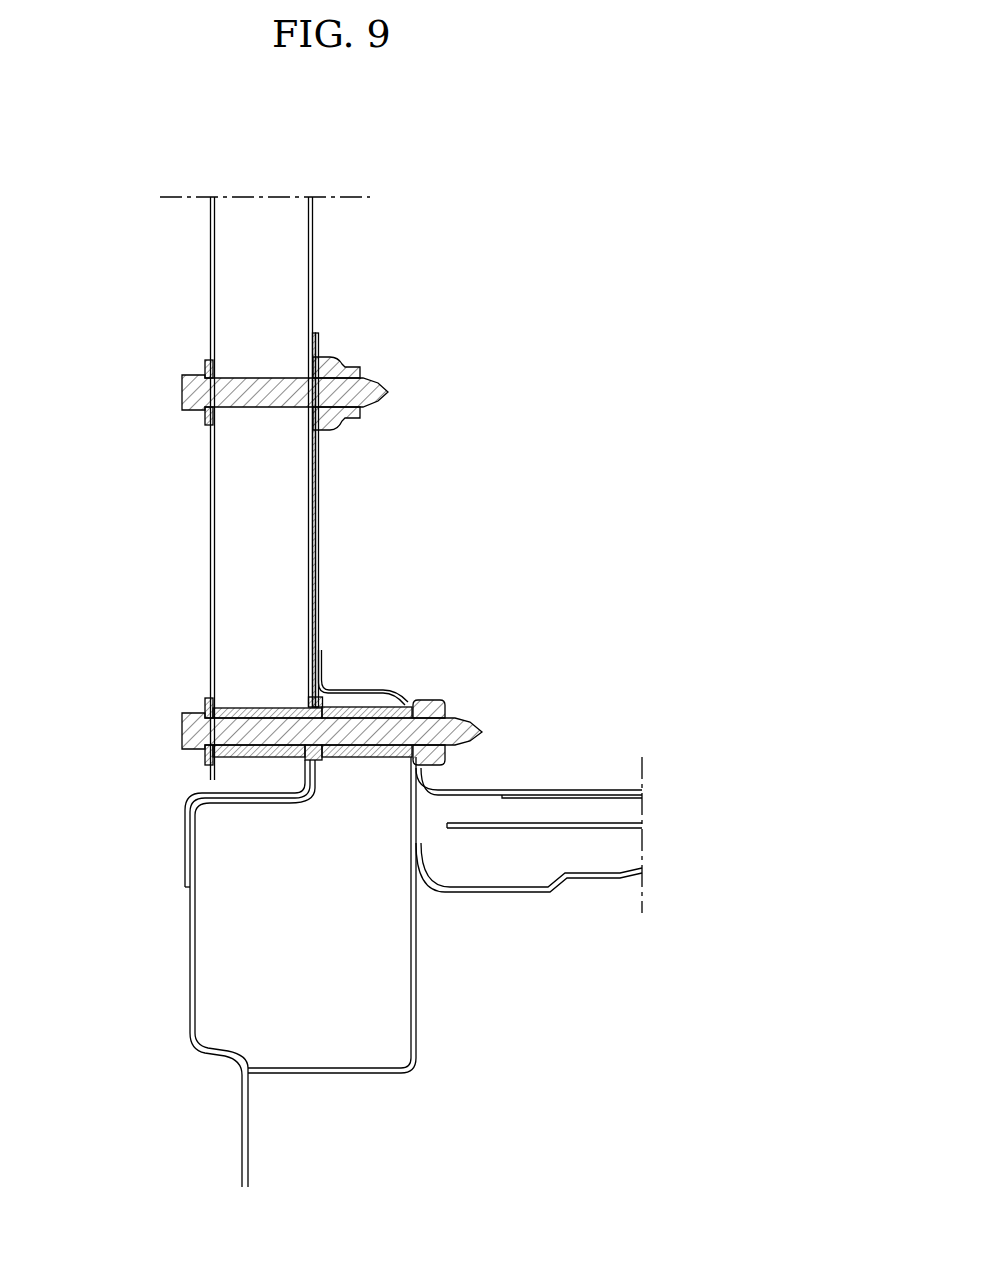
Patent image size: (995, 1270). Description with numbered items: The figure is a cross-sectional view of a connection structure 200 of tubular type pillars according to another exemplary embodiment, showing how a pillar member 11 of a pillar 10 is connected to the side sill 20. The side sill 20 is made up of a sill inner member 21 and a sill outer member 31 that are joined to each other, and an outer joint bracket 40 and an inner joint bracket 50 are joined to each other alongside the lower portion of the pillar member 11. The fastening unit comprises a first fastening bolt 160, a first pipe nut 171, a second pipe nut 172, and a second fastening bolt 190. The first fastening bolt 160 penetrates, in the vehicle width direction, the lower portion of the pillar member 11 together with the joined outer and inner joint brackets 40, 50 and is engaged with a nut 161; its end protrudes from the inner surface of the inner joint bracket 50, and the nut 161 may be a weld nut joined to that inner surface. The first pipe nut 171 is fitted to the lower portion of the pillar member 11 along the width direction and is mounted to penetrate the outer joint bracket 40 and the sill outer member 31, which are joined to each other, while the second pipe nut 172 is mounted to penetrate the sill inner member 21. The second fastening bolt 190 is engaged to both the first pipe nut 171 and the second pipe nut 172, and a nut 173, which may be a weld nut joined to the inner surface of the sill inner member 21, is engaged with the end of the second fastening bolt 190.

The connection structure 200 is at (490, 138).
The pillar 10 is at (246, 488).
The pillar member 11 is at (208, 527).
The side sill 20 is at (346, 972).
The sill inner member 21 is at (416, 990).
The sill outer member 31 is at (190, 983).
The outer joint bracket 40 is at (318, 510).
The inner joint bracket 50 is at (318, 460).
The first fastening bolt 160 is at (182, 390).
The nut 161 is at (345, 357).
The first pipe nut 171 is at (255, 706).
The second pipe nut 172 is at (370, 707).
The nut 173 is at (436, 700).
The second fastening bolt 190 is at (182, 727).